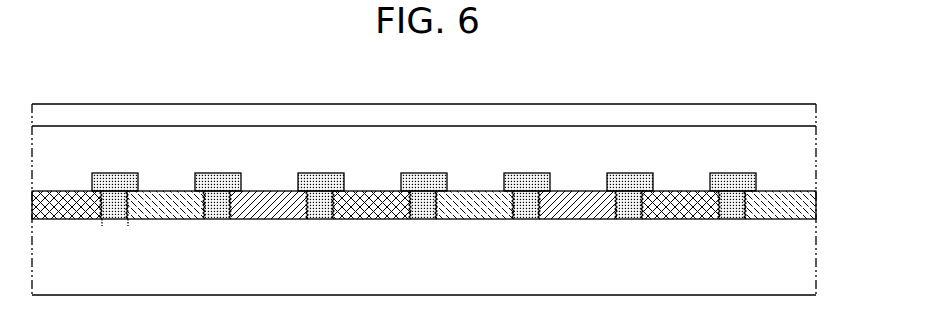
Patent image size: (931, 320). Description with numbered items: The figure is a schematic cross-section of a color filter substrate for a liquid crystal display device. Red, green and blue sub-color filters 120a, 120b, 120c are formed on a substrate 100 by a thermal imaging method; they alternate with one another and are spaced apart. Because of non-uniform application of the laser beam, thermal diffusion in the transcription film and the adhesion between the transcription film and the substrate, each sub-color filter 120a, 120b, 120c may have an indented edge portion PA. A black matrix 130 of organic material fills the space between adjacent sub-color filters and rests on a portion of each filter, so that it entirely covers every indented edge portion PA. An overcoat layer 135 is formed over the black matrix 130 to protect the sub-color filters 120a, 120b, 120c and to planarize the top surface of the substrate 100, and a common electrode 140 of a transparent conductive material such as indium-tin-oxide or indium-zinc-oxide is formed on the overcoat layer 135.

The common electrode 140 is at (790, 118).
The overcoat layer 135 is at (790, 165).
The black matrix 130 is at (118, 176).
The red sub-color filter 120a is at (68, 191).
The green sub-color filter 120b is at (171, 191).
The blue sub-color filter 120c is at (272, 191).
The substrate 100 is at (438, 268).
The indented edge portion PA is at (128, 226).